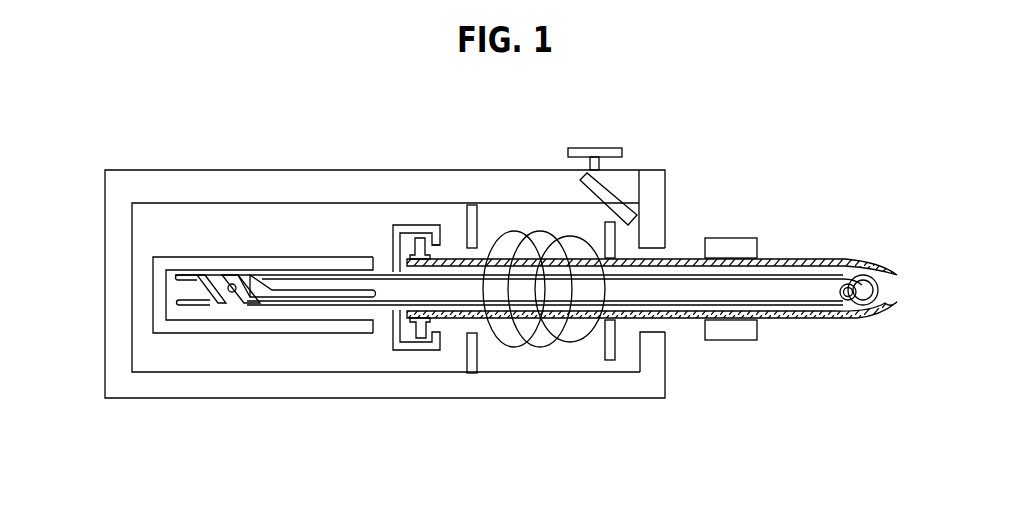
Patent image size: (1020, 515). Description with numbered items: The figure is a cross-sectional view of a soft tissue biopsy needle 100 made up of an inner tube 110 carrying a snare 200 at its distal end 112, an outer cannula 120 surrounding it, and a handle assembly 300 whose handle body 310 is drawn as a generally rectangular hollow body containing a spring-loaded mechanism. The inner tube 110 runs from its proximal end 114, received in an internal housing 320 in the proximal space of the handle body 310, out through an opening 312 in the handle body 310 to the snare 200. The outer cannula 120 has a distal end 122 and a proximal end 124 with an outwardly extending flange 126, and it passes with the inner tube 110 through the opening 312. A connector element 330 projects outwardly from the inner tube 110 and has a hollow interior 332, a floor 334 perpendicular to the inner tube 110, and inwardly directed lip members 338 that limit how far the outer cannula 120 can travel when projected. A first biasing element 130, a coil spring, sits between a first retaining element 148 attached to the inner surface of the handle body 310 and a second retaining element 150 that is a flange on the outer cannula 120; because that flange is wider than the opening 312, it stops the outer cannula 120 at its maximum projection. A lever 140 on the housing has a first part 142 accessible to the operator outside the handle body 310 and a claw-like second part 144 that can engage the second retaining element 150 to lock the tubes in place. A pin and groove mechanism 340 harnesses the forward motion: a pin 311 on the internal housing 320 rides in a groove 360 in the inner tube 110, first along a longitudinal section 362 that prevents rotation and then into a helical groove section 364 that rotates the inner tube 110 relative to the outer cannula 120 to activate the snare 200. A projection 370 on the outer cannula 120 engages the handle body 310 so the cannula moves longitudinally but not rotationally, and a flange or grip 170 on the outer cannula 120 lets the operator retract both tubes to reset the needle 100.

The biopsy needle 100 is at (748, 126).
The inner tube 110 is at (775, 275).
The distal end 112 is at (848, 276).
The proximal end 114 is at (177, 276).
The outer cannula 120 is at (687, 257).
The distal end 122 is at (897, 303).
The proximal end 124 is at (408, 317).
The flange 126 is at (421, 337).
The first biasing element 130 is at (545, 347).
The lever 140 is at (606, 130).
The first part 142 is at (588, 147).
The second part 144 is at (641, 205).
The first retaining element 148 is at (476, 225).
The second retaining element 150 is at (612, 340).
The flange or grip 170 is at (742, 332).
The snare 200 is at (852, 275).
The handle assembly 300 is at (283, 183).
The handle body 310 is at (428, 187).
The pin 311 is at (228, 283).
The opening 312 is at (655, 250).
The internal housing 320 is at (238, 255).
The connector element 330 is at (395, 350).
The hollow interior 332 is at (408, 243).
The floor 334 is at (394, 240).
The flange or lip members 338 is at (441, 243).
The pin and groove mechanism 340 is at (243, 312).
The groove 360 is at (210, 300).
The longitudinal section 362 is at (292, 290).
The helical groove section 364 is at (203, 287).
The projection 370 is at (478, 345).